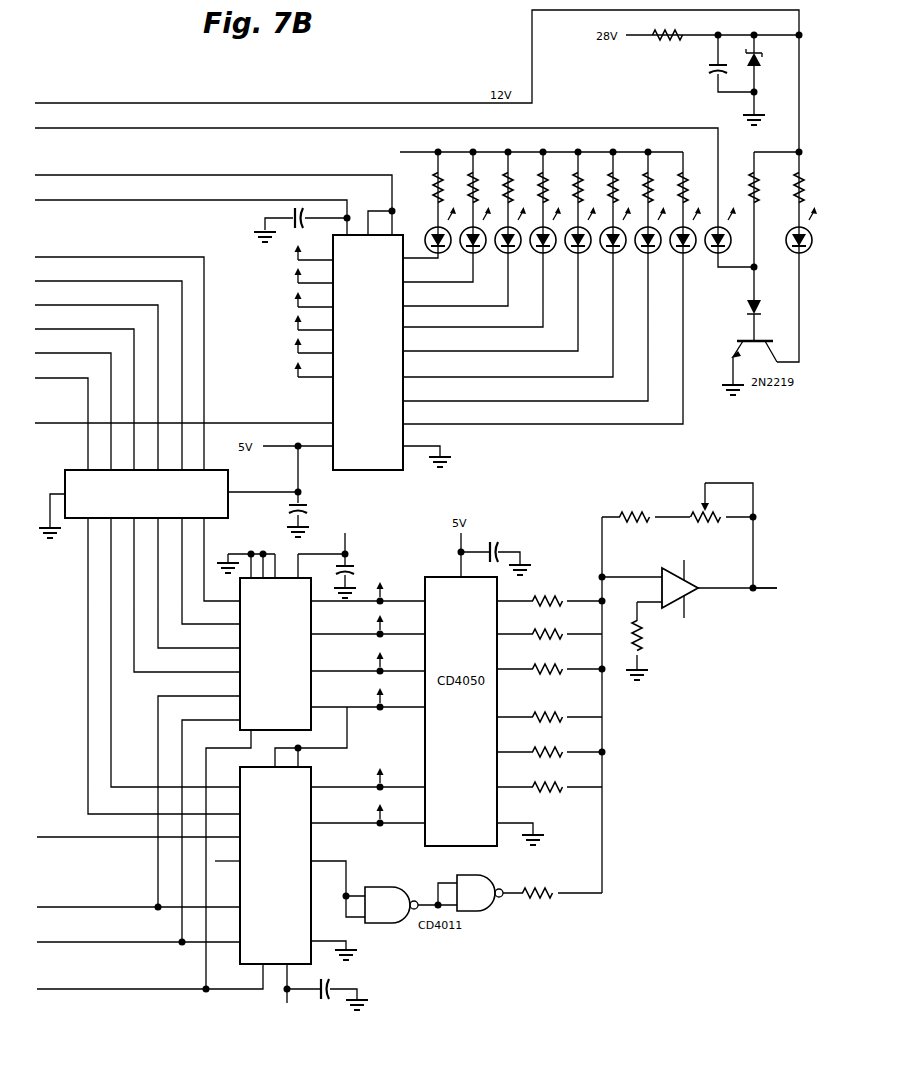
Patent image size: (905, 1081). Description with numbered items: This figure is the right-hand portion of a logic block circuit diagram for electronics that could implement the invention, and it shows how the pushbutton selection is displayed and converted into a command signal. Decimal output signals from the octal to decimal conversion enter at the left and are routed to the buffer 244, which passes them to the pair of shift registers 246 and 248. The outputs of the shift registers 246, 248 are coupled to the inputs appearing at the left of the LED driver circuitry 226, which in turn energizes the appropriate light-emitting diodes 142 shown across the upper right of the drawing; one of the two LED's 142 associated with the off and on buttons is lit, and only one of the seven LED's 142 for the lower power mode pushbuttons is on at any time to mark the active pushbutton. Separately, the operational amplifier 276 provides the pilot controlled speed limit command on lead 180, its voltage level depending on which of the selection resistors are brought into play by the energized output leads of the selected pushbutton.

The light-emitting diodes 142 is at (440, 254).
The LED driver circuitry 226 is at (388, 416).
The buffer 244 is at (216, 512).
The shift register 246 is at (296, 707).
The shift register 248 is at (296, 917).
The operational amplifier 276 is at (687, 582).
The lead 180 is at (766, 591).